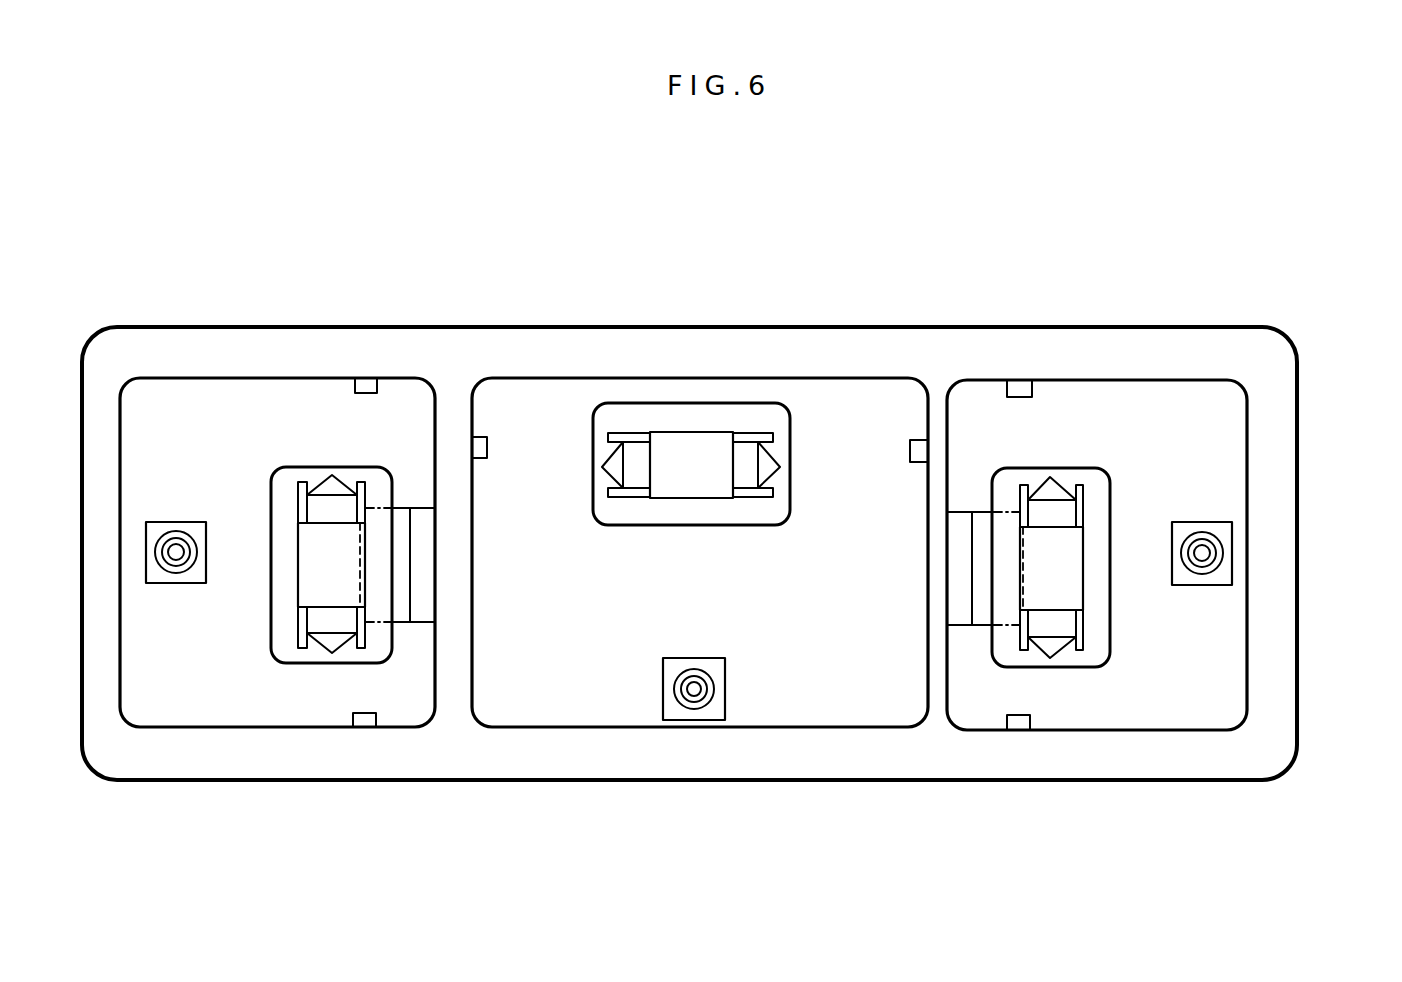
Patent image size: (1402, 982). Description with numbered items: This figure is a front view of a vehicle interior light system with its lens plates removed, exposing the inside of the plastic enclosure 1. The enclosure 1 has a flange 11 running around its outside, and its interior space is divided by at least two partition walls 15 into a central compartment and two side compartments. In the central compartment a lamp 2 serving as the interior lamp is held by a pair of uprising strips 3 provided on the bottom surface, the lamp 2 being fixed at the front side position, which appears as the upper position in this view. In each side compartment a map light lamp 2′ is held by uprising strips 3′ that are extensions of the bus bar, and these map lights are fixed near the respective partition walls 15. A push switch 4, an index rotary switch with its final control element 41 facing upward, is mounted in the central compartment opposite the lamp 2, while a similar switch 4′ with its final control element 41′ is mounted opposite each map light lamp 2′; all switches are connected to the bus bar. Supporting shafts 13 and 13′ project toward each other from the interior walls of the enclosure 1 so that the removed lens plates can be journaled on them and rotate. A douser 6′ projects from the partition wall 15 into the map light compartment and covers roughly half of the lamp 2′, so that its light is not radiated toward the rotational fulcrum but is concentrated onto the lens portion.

The enclosure 1 is at (1320, 366).
The flange 11 is at (1162, 348).
The supporting shaft 13 is at (482, 450).
The supporting shaft 13′ is at (366, 385).
The partition wall 15 is at (455, 583).
The lamp 2 is at (695, 450).
The lamp 2′ is at (322, 565).
The uprising strip 3 is at (633, 435).
The uprising strip 3′ is at (300, 627).
The push switch 4 is at (707, 720).
The push switch 4′ is at (176, 522).
The final control element 41 is at (694, 692).
The final control element 41′ is at (177, 557).
The douser 6′ is at (380, 523).